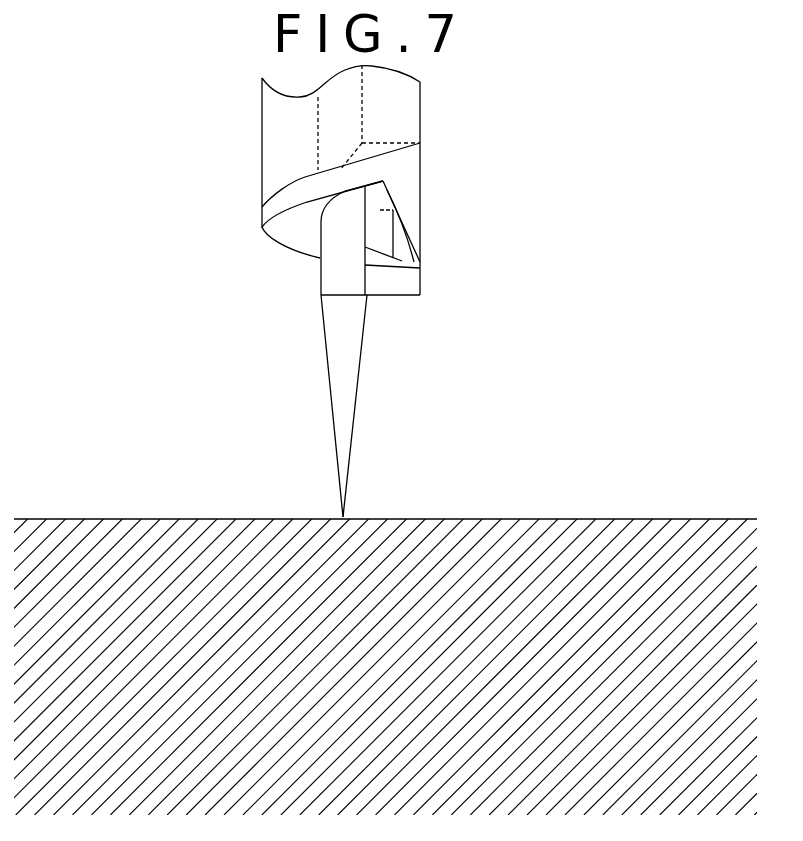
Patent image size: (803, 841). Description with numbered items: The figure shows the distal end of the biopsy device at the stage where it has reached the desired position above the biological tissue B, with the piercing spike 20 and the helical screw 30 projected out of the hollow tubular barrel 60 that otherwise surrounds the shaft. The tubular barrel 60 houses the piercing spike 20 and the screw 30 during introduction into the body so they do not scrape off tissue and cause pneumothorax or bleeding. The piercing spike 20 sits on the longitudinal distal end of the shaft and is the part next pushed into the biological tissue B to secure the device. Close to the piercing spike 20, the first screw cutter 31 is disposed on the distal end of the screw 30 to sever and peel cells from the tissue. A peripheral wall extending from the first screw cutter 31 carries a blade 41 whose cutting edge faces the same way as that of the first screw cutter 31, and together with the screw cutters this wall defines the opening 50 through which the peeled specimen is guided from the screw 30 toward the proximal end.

The piercing spike 20 is at (350, 473).
The helical screw 30 is at (262, 212).
The first screw cutter 31 is at (393, 295).
The blade 41 is at (420, 230).
The opening 50 is at (395, 210).
The tubular barrel 60 is at (420, 131).
The biological tissue B is at (607, 519).